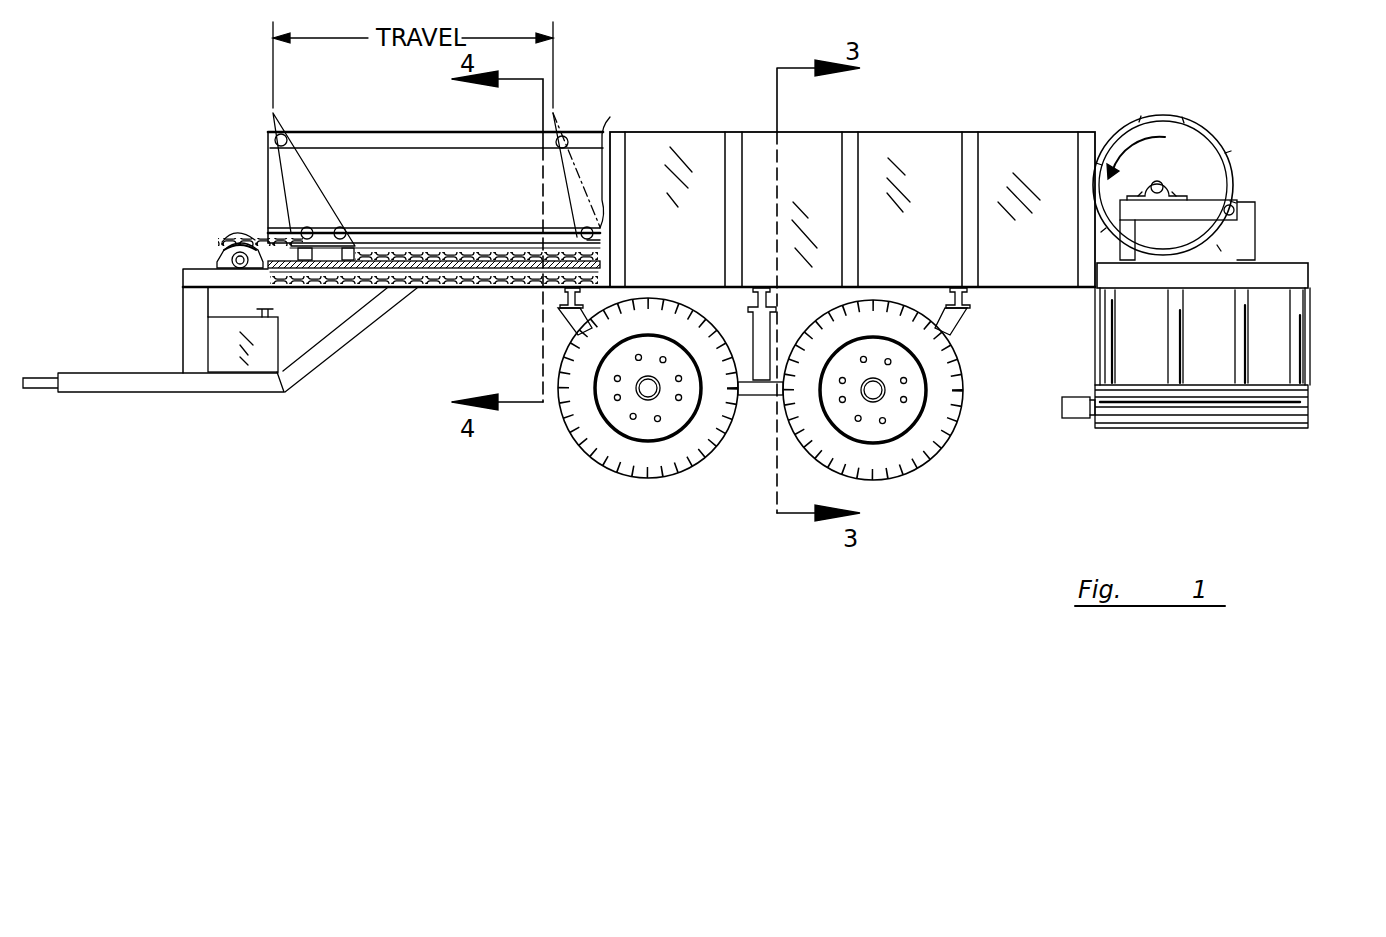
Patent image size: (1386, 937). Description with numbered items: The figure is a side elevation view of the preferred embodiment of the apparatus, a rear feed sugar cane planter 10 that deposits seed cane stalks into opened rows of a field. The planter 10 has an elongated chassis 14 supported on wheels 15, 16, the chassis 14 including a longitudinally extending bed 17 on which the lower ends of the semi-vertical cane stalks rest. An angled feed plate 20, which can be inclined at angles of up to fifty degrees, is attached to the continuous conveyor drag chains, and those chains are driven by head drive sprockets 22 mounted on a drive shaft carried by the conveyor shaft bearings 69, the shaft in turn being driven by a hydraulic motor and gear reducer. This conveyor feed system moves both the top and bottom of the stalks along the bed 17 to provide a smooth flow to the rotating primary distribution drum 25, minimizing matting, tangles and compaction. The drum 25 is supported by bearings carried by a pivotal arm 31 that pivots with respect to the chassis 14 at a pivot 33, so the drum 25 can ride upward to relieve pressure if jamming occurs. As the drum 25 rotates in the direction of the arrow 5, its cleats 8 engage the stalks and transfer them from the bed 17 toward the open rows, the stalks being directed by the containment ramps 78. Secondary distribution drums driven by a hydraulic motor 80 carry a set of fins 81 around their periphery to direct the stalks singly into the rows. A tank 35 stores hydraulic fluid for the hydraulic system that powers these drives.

The sugar cane planter 10 is at (708, 102).
The elongated chassis 14 is at (533, 288).
The wheel 15 is at (585, 452).
The wheel 16 is at (930, 455).
The bed 17 is at (487, 288).
The angled feed plate 20 is at (305, 172).
The head drive sprockets 22 is at (255, 240).
The primary distribution drum 25 is at (1197, 176).
The pivotal arm 31 is at (1210, 205).
The pivot 33 is at (1237, 205).
The tank 35 is at (267, 356).
The arrow 5 is at (1148, 138).
The conveyor shaft bearings 69 is at (225, 238).
The containment ramps 78 is at (1288, 313).
The cleats 8 is at (1215, 150).
The hydraulic motor 80 is at (1075, 395).
The fins 81 is at (1288, 432).